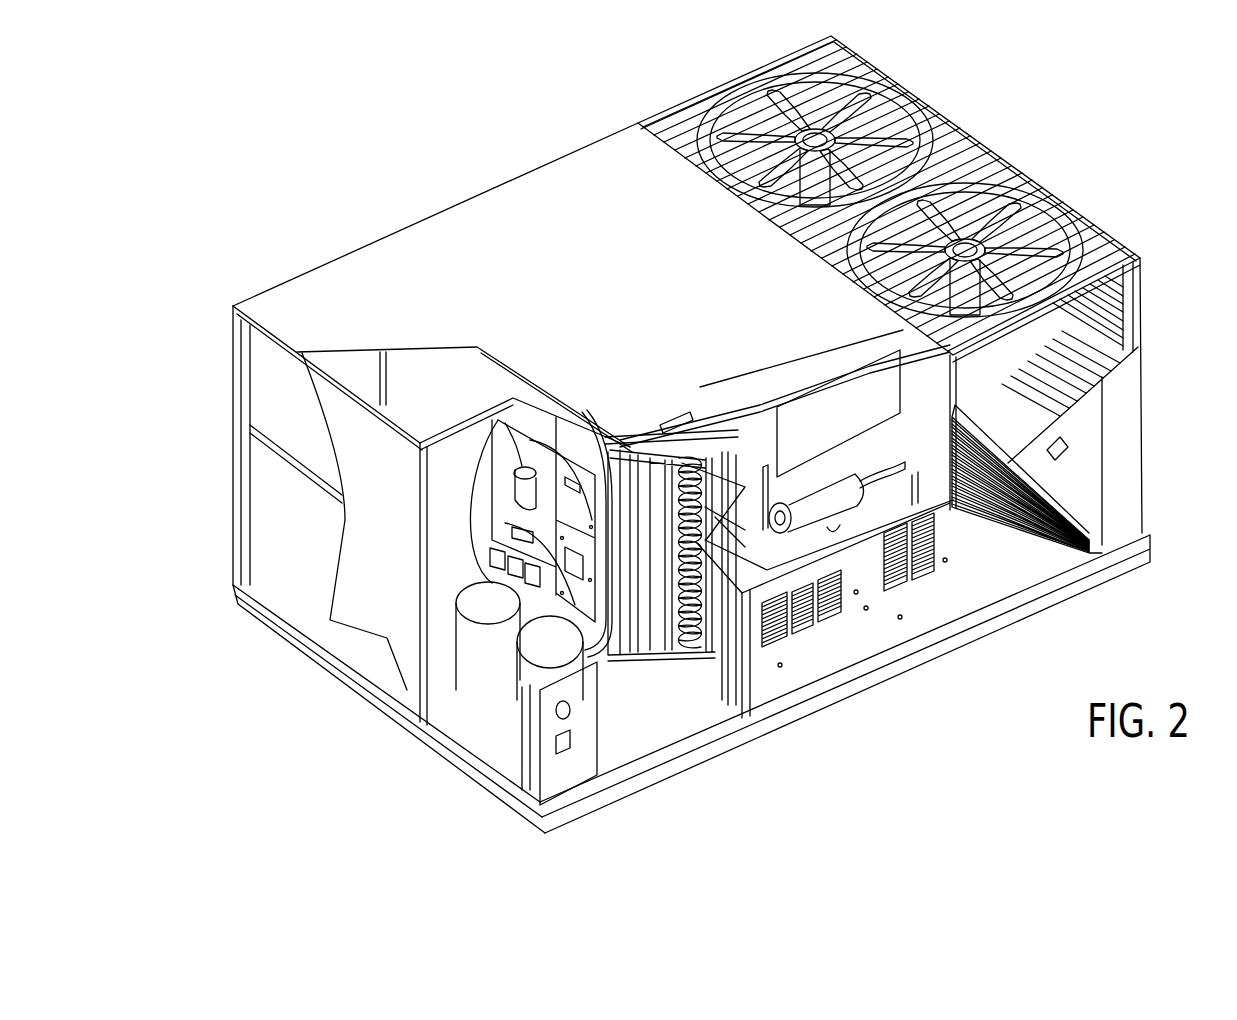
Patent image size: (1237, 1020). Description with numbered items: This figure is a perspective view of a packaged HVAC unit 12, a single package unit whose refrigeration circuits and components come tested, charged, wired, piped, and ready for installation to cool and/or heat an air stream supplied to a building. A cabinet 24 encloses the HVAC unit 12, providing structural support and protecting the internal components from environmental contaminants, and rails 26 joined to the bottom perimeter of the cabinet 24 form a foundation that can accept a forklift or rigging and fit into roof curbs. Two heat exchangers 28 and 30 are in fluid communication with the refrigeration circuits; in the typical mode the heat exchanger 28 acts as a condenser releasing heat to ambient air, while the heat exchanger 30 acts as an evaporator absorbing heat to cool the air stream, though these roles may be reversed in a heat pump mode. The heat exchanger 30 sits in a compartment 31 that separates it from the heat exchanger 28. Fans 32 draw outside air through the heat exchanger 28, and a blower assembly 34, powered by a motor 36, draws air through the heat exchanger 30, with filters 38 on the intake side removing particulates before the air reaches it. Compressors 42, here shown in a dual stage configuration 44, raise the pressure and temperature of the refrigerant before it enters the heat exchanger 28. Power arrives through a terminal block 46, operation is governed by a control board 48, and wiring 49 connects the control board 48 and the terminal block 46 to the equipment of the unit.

The HVAC unit 12 is at (418, 134).
The cabinet 24 is at (278, 556).
The rails 26 is at (297, 650).
The heat exchanger 28 is at (1142, 313).
The heat exchanger 30 is at (698, 650).
The compartment 31 is at (722, 440).
The fans 32 is at (975, 205).
The blower assembly 34 is at (880, 440).
The motor 36 is at (817, 493).
The filters 38 is at (648, 462).
The compressors 42 is at (463, 635).
The dual stage configuration 44 is at (456, 592).
The terminal block 46 is at (505, 523).
The control board 48 is at (570, 540).
The wiring 49 is at (673, 417).